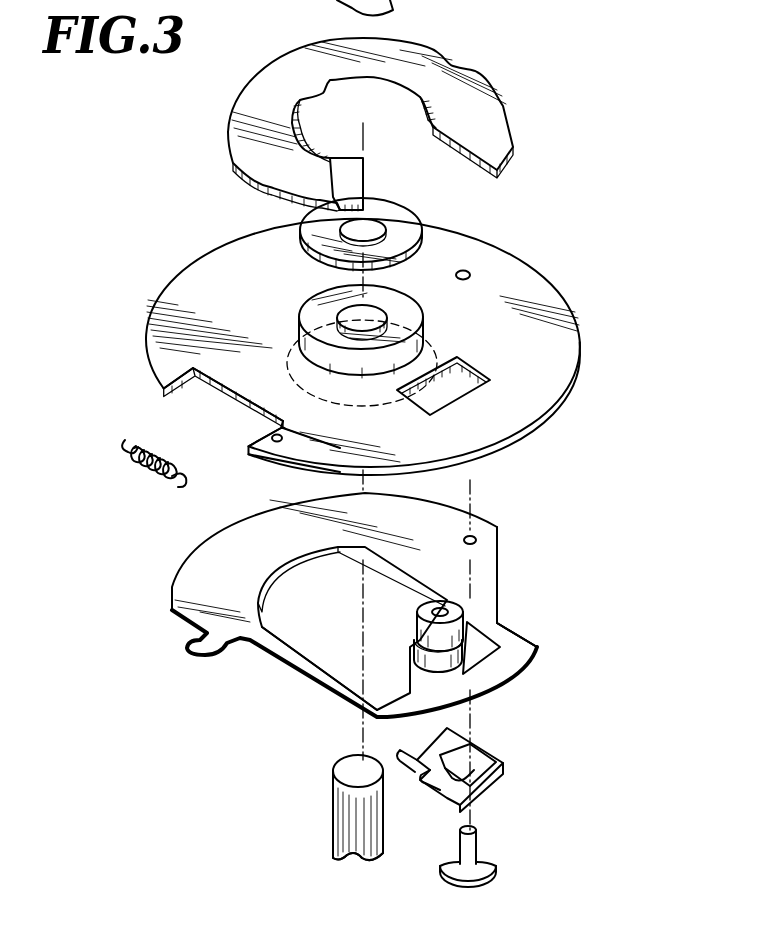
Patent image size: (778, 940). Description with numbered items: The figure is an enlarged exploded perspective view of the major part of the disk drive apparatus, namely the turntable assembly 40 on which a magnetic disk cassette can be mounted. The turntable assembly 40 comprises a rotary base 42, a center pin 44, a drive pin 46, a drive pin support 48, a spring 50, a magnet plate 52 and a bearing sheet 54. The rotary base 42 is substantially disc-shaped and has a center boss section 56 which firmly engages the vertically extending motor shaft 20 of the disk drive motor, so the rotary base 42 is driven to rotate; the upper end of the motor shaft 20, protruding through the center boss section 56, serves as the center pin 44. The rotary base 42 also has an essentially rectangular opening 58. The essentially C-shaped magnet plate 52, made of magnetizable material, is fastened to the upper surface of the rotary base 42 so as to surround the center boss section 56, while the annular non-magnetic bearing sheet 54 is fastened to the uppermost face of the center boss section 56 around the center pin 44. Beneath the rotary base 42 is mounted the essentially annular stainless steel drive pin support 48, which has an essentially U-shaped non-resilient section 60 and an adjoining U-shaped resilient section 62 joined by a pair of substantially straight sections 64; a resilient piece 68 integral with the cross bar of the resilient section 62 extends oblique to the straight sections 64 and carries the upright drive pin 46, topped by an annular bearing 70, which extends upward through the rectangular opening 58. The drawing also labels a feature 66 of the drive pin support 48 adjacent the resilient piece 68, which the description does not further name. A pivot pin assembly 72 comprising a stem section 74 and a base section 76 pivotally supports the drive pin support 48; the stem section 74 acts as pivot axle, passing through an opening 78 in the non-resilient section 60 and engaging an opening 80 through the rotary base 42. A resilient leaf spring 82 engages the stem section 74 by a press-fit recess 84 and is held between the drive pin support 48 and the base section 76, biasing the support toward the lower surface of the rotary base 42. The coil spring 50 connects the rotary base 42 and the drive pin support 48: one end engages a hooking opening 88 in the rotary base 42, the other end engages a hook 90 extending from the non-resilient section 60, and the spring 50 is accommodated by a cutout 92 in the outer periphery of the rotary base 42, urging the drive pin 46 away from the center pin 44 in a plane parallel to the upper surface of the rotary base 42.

The motor shaft 20 is at (340, 838).
The turntable assembly 40 is at (585, 333).
The rotary base 42 is at (515, 270).
The center pin 44 is at (333, 773).
The drive pin 46 is at (474, 634).
The drive pin support 48 is at (502, 554).
The spring 50 is at (135, 465).
The magnet plate 52 is at (228, 134).
The bearing sheet 54 is at (410, 220).
The center boss section 56 is at (410, 321).
The rectangular opening 58 is at (462, 390).
The non-resilient section 60 is at (190, 584).
The resilient section 62 is at (513, 646).
The straight sections 64 is at (313, 675).
The slot 66 is at (486, 682).
The resilient piece 68 is at (418, 676).
The annular bearing 70 is at (463, 607).
The pivot pin assembly 72 is at (490, 848).
The stem section 74 is at (460, 846).
The base section 76 is at (486, 851).
The opening 78 is at (473, 536).
The opening 80 is at (467, 271).
The resilient leaf spring 82 is at (488, 760).
The press-fit recess 84 is at (498, 782).
The hooking opening 88 is at (258, 443).
The hook 90 is at (195, 653).
The cutout 92 is at (213, 394).